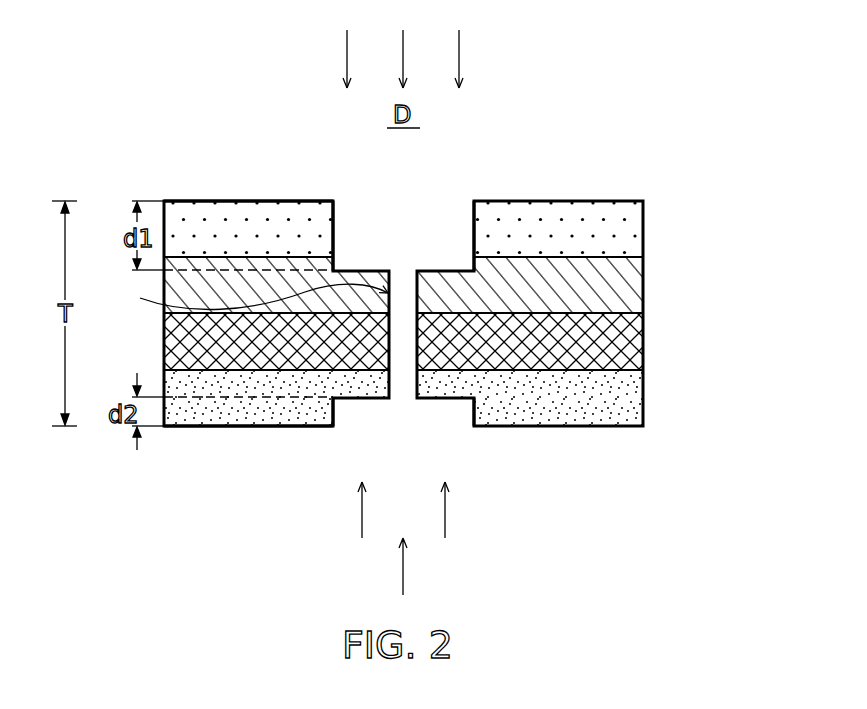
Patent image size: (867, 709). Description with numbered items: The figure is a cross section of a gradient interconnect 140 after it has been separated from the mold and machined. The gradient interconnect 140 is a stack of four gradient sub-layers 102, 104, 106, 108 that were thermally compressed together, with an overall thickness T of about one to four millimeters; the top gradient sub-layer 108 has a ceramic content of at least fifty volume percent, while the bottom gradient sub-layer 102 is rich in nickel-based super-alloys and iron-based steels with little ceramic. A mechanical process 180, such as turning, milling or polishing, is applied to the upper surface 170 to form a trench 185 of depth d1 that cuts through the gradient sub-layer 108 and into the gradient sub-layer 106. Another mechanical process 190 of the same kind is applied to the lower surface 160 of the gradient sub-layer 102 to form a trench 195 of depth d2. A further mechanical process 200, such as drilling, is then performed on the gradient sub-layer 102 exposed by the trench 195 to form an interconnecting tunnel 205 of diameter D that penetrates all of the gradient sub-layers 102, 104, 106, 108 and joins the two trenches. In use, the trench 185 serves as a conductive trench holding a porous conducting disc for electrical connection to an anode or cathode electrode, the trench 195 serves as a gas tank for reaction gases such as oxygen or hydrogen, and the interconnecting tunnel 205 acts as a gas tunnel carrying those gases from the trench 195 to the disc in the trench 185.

The gradient sub-layer 102 is at (643, 396).
The gradient sub-layer 104 is at (643, 340).
The gradient sub-layer 106 is at (643, 283).
The gradient sub-layer 108 is at (643, 226).
The gradient interconnect 140 is at (603, 86).
The surface 160 is at (234, 430).
The surface 170 is at (233, 199).
The mechanical process 180 is at (460, 60).
The trench 185 is at (471, 214).
The mechanical process 190 is at (446, 509).
The trench 195 is at (471, 410).
The mechanical process 200 is at (404, 568).
The interconnecting tunnel 205 is at (243, 298).